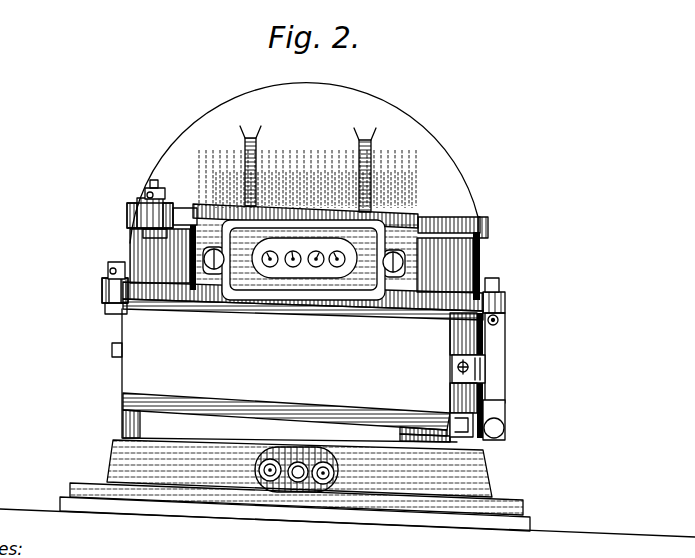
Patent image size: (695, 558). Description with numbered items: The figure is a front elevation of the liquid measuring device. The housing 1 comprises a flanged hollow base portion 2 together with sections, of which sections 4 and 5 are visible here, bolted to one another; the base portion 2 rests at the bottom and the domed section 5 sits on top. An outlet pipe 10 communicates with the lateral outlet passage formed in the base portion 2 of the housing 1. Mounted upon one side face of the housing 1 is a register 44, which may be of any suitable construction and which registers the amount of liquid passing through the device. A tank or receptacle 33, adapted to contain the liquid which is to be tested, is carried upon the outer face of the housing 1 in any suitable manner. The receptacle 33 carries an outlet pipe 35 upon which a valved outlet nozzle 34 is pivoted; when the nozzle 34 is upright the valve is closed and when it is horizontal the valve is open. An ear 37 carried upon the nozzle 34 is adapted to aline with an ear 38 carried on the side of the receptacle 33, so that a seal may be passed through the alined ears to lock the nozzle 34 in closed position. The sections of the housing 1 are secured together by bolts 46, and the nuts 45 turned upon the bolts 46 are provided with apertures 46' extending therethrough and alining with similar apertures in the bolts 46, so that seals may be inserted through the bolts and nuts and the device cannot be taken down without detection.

The housing 1 is at (473, 122).
The flanged hollow base portion 2 is at (512, 517).
The section 4 is at (460, 263).
The section 5 is at (431, 168).
The outlet pipe 10 is at (298, 476).
The tank or receptacle 33 is at (152, 332).
The valved outlet nozzle 34 is at (504, 331).
The outlet pipe 35 is at (485, 437).
The ear 37 is at (505, 368).
The ear 38 is at (505, 388).
The register 44 is at (245, 238).
The nuts 45 is at (142, 185).
The bolts 46 is at (312, 208).
The apertures 46' is at (111, 227).